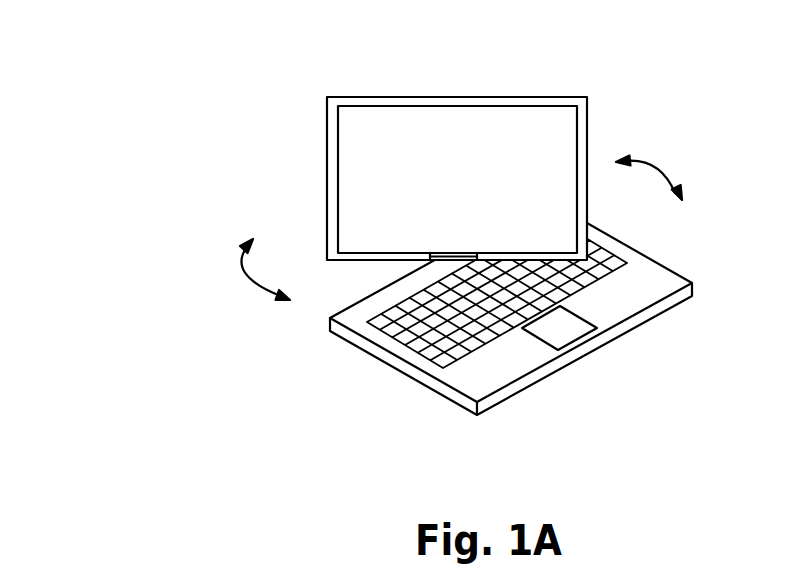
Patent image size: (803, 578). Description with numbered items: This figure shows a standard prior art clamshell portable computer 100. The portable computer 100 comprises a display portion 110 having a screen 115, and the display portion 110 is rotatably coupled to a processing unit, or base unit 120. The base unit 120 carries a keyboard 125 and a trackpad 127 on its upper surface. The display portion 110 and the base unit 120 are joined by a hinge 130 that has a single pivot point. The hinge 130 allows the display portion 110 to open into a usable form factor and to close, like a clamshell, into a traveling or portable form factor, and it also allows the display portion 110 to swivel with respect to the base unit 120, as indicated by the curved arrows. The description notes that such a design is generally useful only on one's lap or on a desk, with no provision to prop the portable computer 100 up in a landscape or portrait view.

The clamshell portable computer 100 is at (141, 59).
The display portion 110 is at (326, 147).
The screen 115 is at (468, 117).
The base unit 120 is at (417, 410).
The keyboard 125 is at (428, 326).
The trackpad 127 is at (565, 334).
The hinge 130 is at (457, 256).